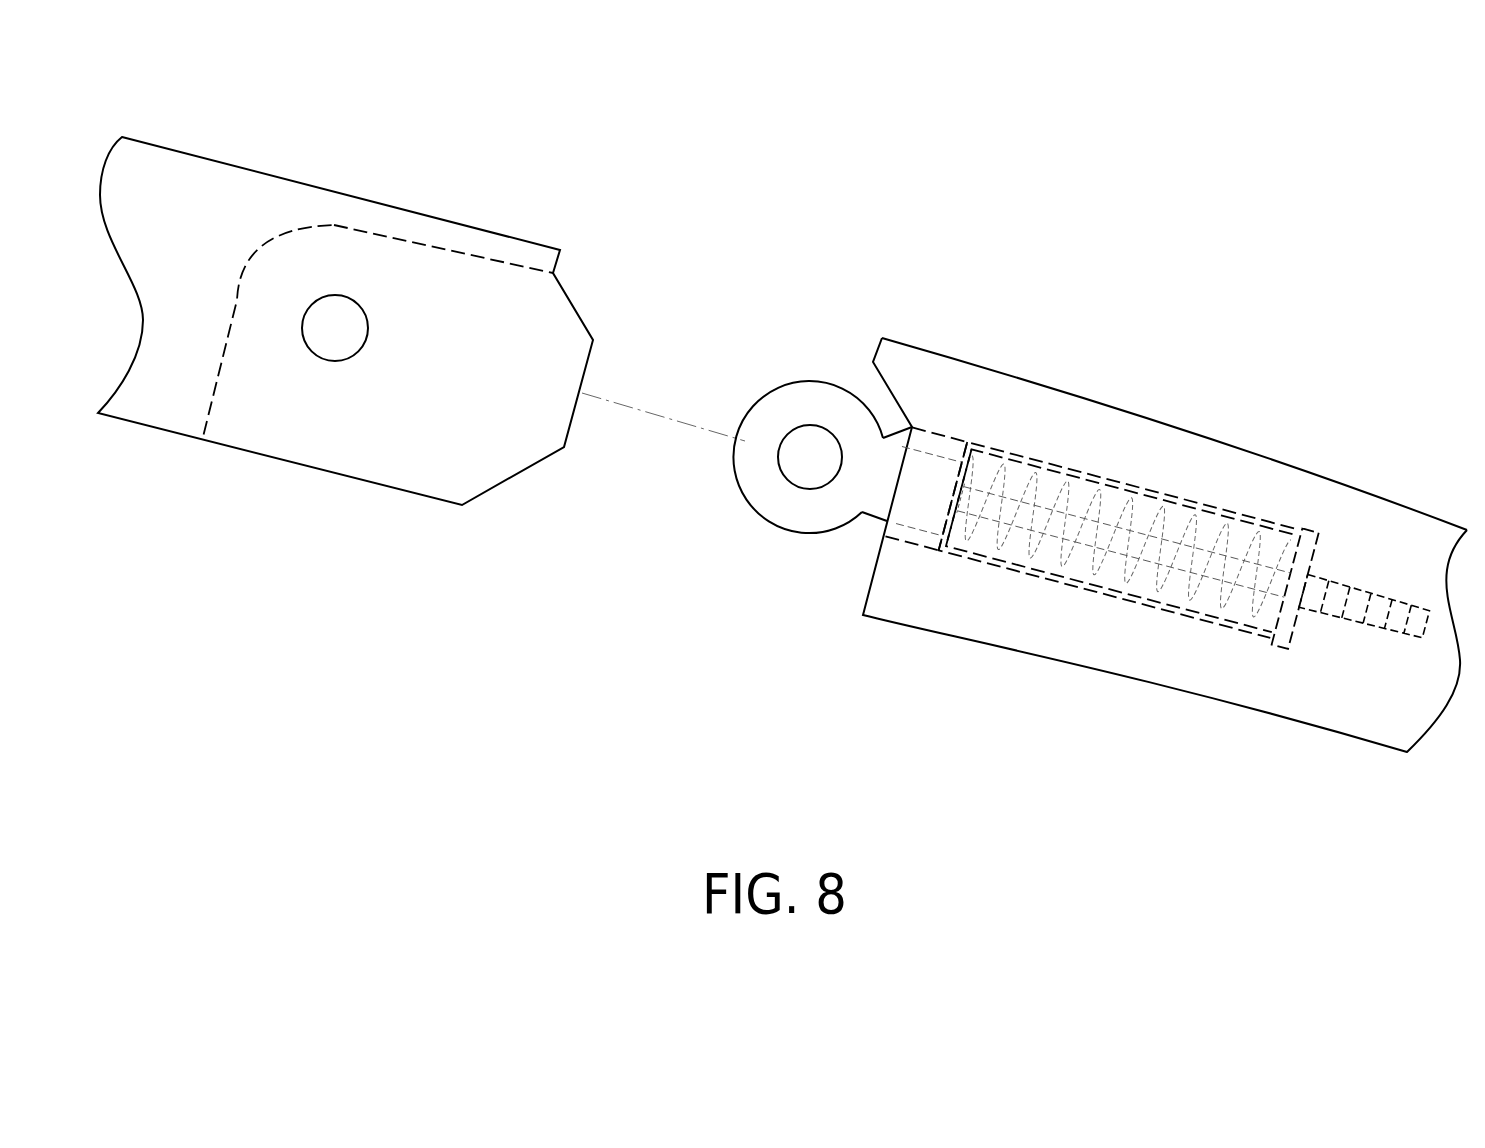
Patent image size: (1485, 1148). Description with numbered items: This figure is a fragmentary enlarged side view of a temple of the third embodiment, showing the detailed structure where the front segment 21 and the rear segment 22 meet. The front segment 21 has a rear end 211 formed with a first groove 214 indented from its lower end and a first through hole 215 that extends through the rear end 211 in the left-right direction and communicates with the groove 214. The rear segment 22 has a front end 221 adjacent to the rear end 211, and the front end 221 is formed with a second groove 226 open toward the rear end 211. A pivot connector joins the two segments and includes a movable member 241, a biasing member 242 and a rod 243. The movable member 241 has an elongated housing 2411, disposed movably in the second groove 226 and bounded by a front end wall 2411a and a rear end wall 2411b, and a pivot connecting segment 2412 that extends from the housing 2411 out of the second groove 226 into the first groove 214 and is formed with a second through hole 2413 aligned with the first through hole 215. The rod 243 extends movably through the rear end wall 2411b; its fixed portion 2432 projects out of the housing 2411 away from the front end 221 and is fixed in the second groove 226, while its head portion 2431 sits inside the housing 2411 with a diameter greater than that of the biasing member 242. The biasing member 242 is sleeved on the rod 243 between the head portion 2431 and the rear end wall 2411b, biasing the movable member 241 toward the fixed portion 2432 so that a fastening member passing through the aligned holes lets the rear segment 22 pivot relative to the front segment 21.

The front segment 21 is at (162, 178).
The rear end 211 is at (435, 285).
The groove 214 is at (235, 303).
The first through hole 215 is at (320, 337).
The rear segment 22 is at (1218, 458).
The front end 221 is at (980, 398).
The second groove 226 is at (1097, 470).
The movable member 241 is at (775, 537).
The elongated housing 2411 is at (1214, 512).
The front end wall 2411a is at (943, 553).
The rear end wall 2411b is at (1260, 635).
The pivot connecting segment 2412 is at (903, 530).
The second through hole 2413 is at (786, 466).
The biasing member 242 is at (1060, 570).
The rod 243 is at (1175, 567).
The head portion 2431 is at (962, 455).
The fixed portion 2432 is at (1413, 617).